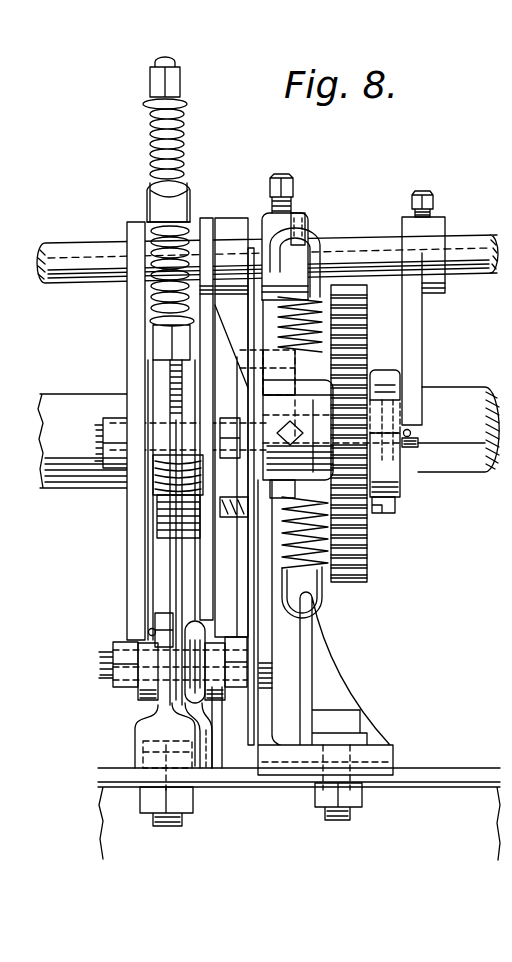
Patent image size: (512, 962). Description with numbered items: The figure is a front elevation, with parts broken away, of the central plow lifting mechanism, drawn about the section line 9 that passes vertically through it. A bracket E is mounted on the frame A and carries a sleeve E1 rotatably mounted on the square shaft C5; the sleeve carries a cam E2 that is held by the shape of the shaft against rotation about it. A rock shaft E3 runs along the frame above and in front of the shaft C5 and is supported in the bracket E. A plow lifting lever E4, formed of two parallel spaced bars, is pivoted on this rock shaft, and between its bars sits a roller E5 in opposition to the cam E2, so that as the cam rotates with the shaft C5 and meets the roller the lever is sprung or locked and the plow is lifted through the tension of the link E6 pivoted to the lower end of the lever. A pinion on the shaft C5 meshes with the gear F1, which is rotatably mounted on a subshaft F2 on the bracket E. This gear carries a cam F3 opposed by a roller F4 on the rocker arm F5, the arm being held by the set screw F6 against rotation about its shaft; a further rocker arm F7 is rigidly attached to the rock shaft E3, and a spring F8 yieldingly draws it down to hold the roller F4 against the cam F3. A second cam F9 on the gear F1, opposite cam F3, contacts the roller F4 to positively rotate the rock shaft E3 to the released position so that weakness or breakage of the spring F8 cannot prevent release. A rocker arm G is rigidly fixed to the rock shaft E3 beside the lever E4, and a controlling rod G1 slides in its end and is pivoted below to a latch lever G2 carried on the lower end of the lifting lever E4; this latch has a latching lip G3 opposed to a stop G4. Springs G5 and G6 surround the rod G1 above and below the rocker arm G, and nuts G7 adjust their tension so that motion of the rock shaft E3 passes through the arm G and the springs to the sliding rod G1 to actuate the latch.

The section line 9- 9 is at (163, 35).
The frame A is at (98, 818).
The square shaft C5 is at (451, 390).
The bracket E is at (322, 672).
The sleeve E1 is at (263, 505).
The cam E2 is at (163, 508).
The rock shaft E3 is at (464, 242).
The plow lifting lever E4 is at (225, 598).
The roller E5 is at (163, 477).
The link E6 is at (202, 702).
The gear F1 is at (358, 542).
The subshaft F2 is at (412, 447).
The cam F3 is at (396, 486).
The roller F4 is at (382, 376).
The rocker arm F5 is at (412, 313).
The set screw F6 is at (426, 196).
The rocker arm F7 is at (298, 210).
The spring F8 is at (325, 592).
The cam F9 is at (384, 512).
The rocker arm G is at (155, 200).
The controlling rod G1 is at (170, 557).
The latch lever G2 is at (165, 660).
The latching lip G3 is at (150, 733).
The stop G4 is at (143, 759).
The spring G5 is at (150, 135).
The spring G6 is at (155, 305).
The nut G7 is at (158, 93).